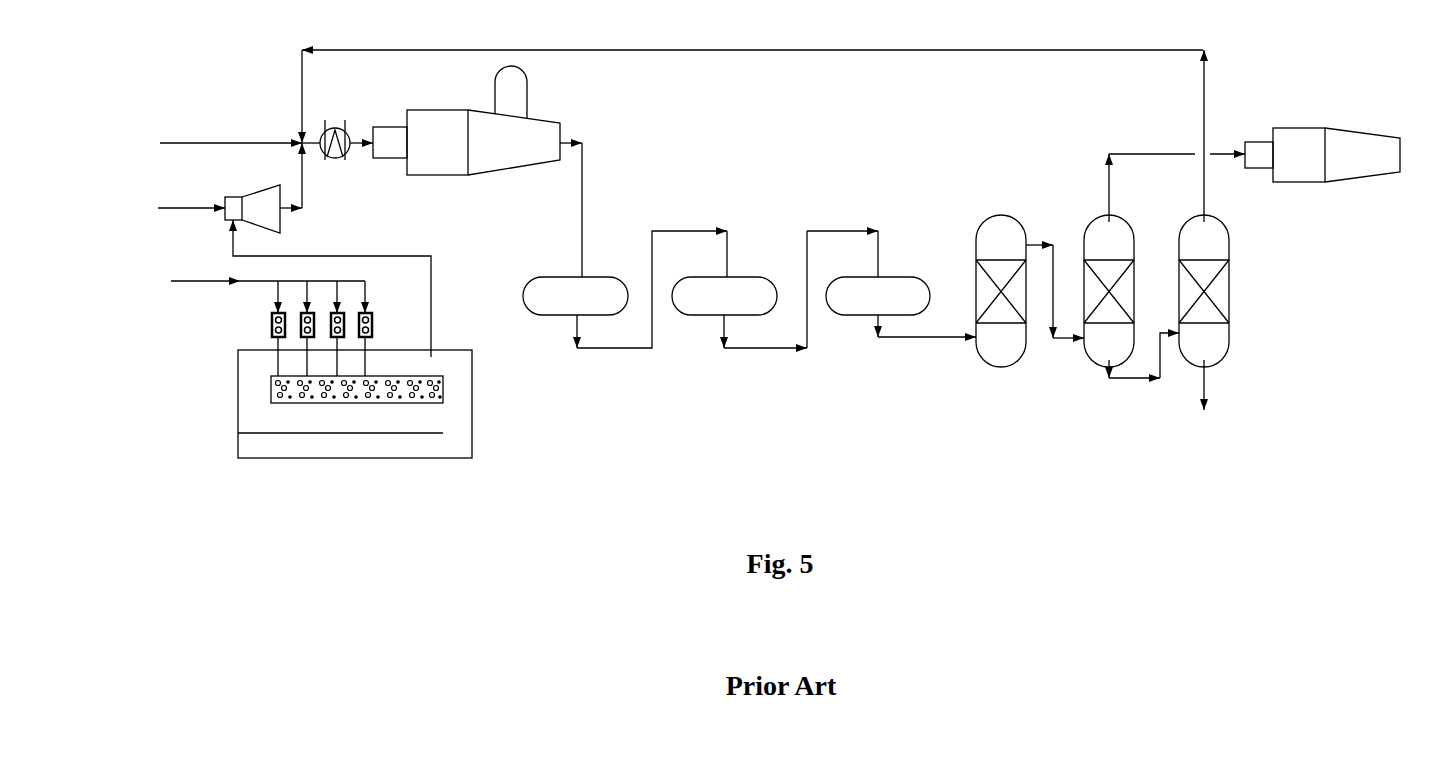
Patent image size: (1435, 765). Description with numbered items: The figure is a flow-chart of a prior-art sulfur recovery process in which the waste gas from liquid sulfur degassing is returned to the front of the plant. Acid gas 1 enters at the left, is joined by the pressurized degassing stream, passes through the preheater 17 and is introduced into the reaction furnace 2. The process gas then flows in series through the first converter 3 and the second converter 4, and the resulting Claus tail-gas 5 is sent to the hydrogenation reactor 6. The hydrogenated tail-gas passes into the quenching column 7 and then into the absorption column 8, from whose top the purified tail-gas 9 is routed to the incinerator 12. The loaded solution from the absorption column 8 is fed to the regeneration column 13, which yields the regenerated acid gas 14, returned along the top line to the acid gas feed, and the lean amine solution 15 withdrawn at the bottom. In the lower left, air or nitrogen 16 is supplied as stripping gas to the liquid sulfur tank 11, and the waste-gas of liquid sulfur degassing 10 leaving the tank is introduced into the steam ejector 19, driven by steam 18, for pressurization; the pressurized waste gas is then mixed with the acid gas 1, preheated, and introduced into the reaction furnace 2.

The acid gas 1 is at (240, 131).
The reaction furnace 2 is at (477, 171).
The first converter 3 is at (625, 289).
The second converter 4 is at (739, 289).
The Claus tail-gas 5 is at (842, 241).
The hydrogenation reactor 6 is at (901, 307).
The quenching column 7 is at (1030, 291).
The absorption column 8 is at (1131, 296).
The purified tail-gas 9 is at (1169, 188).
The waste-gas of liquid sulfur degassing 10 is at (332, 288).
The liquid sulfur tank 11 is at (355, 404).
The incinerator 12 is at (1322, 155).
The regeneration column 13 is at (1204, 291).
The regenerated acid gas 14 is at (753, 123).
The lean amine solution 15 is at (1205, 398).
The air or nitrogen 16 is at (271, 316).
The preheater 17 is at (346, 128).
The steam 18 is at (191, 197).
The steam ejector 19 is at (263, 188).